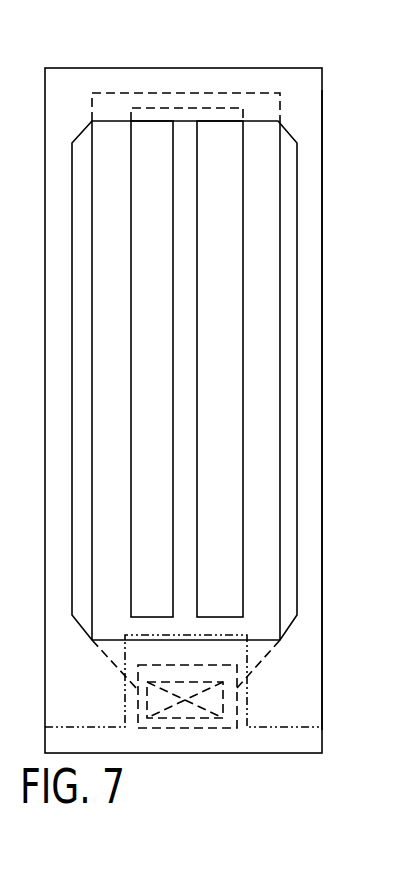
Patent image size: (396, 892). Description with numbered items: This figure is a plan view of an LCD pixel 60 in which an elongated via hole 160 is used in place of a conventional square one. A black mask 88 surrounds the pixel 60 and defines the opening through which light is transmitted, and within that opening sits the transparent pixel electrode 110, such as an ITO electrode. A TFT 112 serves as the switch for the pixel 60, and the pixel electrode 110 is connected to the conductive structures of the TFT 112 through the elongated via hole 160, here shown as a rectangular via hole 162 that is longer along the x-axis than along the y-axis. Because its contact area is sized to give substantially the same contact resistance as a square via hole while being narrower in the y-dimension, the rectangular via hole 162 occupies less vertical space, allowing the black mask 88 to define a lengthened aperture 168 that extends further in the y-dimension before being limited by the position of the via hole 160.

The pixel 60 is at (340, 153).
The black mask 88 is at (310, 253).
The lengthened aperture 168 is at (299, 379).
The pixel electrode 110 is at (270, 510).
The elongated via hole 160 is at (218, 733).
The rectangular via hole 162 is at (256, 711).
The TFT 112 is at (174, 720).